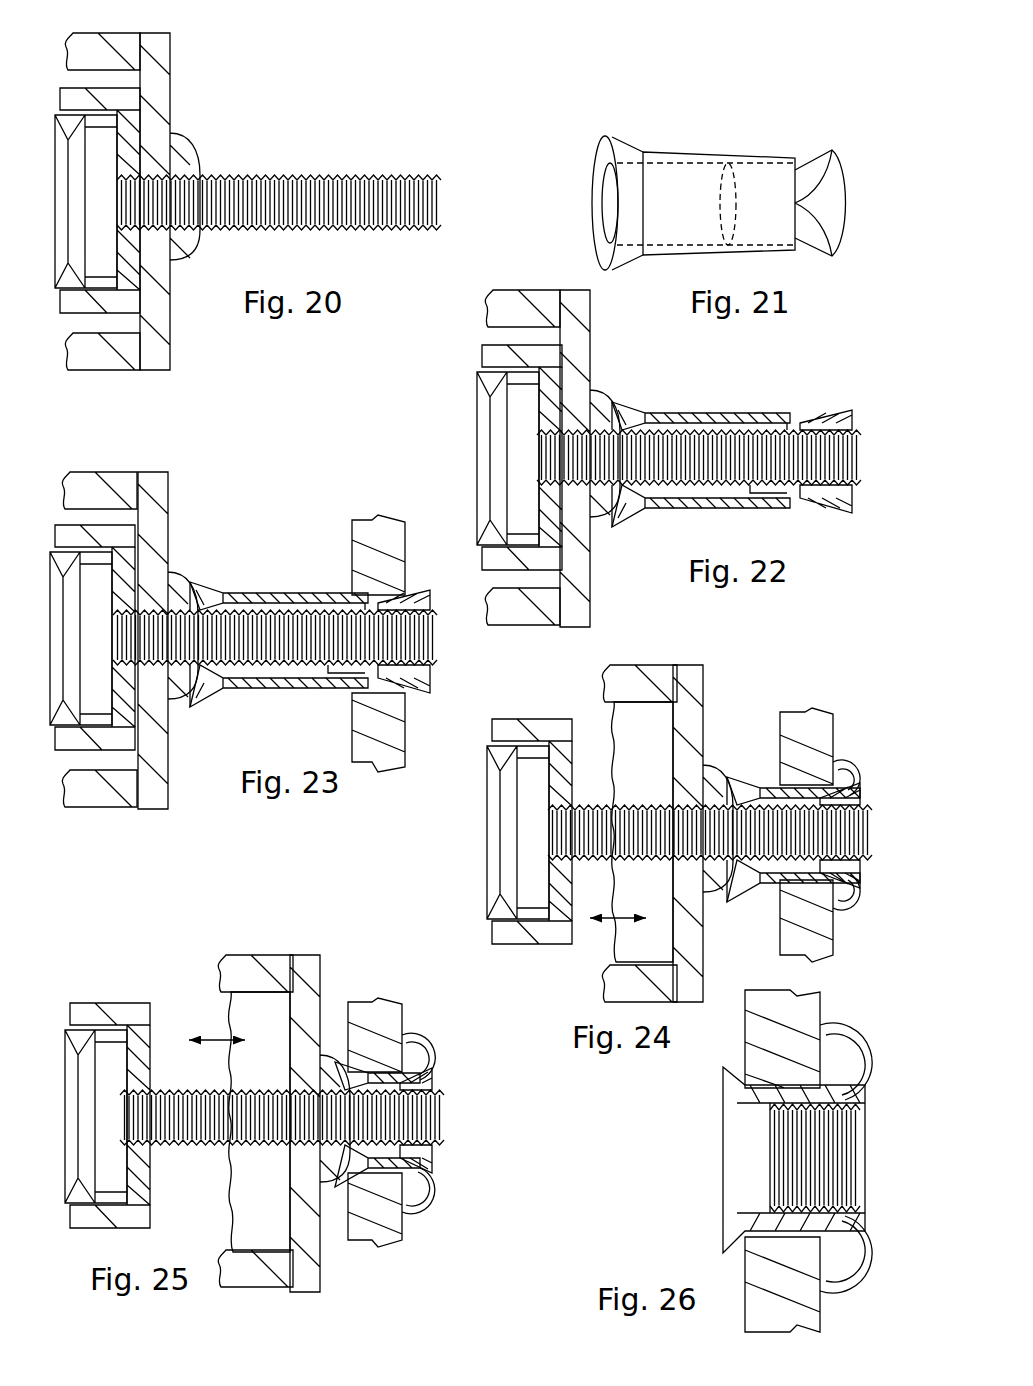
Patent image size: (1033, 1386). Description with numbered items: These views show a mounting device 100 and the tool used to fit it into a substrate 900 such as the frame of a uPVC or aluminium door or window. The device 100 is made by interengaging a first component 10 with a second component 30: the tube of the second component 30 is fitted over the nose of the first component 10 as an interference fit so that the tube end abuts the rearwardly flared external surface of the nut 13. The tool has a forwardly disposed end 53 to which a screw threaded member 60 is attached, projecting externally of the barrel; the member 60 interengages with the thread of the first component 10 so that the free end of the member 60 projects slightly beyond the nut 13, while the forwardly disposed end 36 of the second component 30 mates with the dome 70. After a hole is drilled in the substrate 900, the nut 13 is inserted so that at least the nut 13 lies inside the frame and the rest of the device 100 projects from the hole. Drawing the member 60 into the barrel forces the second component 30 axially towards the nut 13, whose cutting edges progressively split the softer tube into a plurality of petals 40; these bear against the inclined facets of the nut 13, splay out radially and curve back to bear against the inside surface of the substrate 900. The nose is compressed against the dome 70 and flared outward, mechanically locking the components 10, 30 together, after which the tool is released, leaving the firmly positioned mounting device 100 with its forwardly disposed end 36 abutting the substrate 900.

In FIG. 21, the first component 10 is at (854, 155).
In FIG. 22, the first component 10 is at (848, 400).
In FIG. 23, the first component 10 is at (425, 585).
In FIG. 24, the first component 10 is at (872, 880).
In FIG. 25, the first component 10 is at (442, 1072).
In FIG. 21, the nut 13 is at (830, 160).
In FIG. 21, the second component 30 is at (678, 138).
In FIG. 22, the second component 30 is at (688, 408).
In FIG. 23, the second component 30 is at (267, 587).
In FIG. 24, the second component 30 is at (762, 775).
In FIG. 25, the second component 30 is at (377, 1124).
In FIG. 26, the second component 30 is at (794, 1160).
In FIG. 21, the forwardly disposed end 36 is at (604, 140).
In FIG. 22, the forwardly disposed end 36 is at (612, 401).
In FIG. 23, the forwardly disposed end 36 is at (190, 581).
In FIG. 24, the forwardly disposed end 36 is at (733, 782).
In FIG. 24, the petals 40 is at (847, 763).
In FIG. 25, the petals 40 is at (424, 1050).
In FIG. 26, the petals 40 is at (845, 1042).
In FIG. 20, the forwardly disposed end 53 is at (120, 33).
In FIG. 22, the forwardly disposed end 53 is at (590, 625).
In FIG. 23, the forwardly disposed end 53 is at (112, 470).
In FIG. 24, the forwardly disposed end 53 is at (652, 665).
In FIG. 25, the forwardly disposed end 53 is at (258, 955).
In FIG. 20, the screw threaded member 60 is at (296, 186).
In FIG. 22, the screw threaded member 60 is at (712, 445).
In FIG. 23, the screw threaded member 60 is at (290, 622).
In FIG. 24, the screw threaded member 60 is at (637, 806).
In FIG. 25, the screw threaded member 60 is at (440, 1123).
In FIG. 20, the dome 70 is at (172, 110).
In FIG. 22, the dome 70 is at (590, 330).
In FIG. 23, the dome 70 is at (168, 510).
In FIG. 24, the dome 70 is at (702, 702).
In FIG. 25, the dome 70 is at (318, 982).
In FIG. 21, the mounting device 100 is at (685, 169).
In FIG. 23, the substrate 900 is at (345, 533).
In FIG. 24, the substrate 900 is at (786, 890).
In FIG. 25, the substrate 900 is at (374, 1236).
In FIG. 26, the substrate 900 is at (752, 1042).